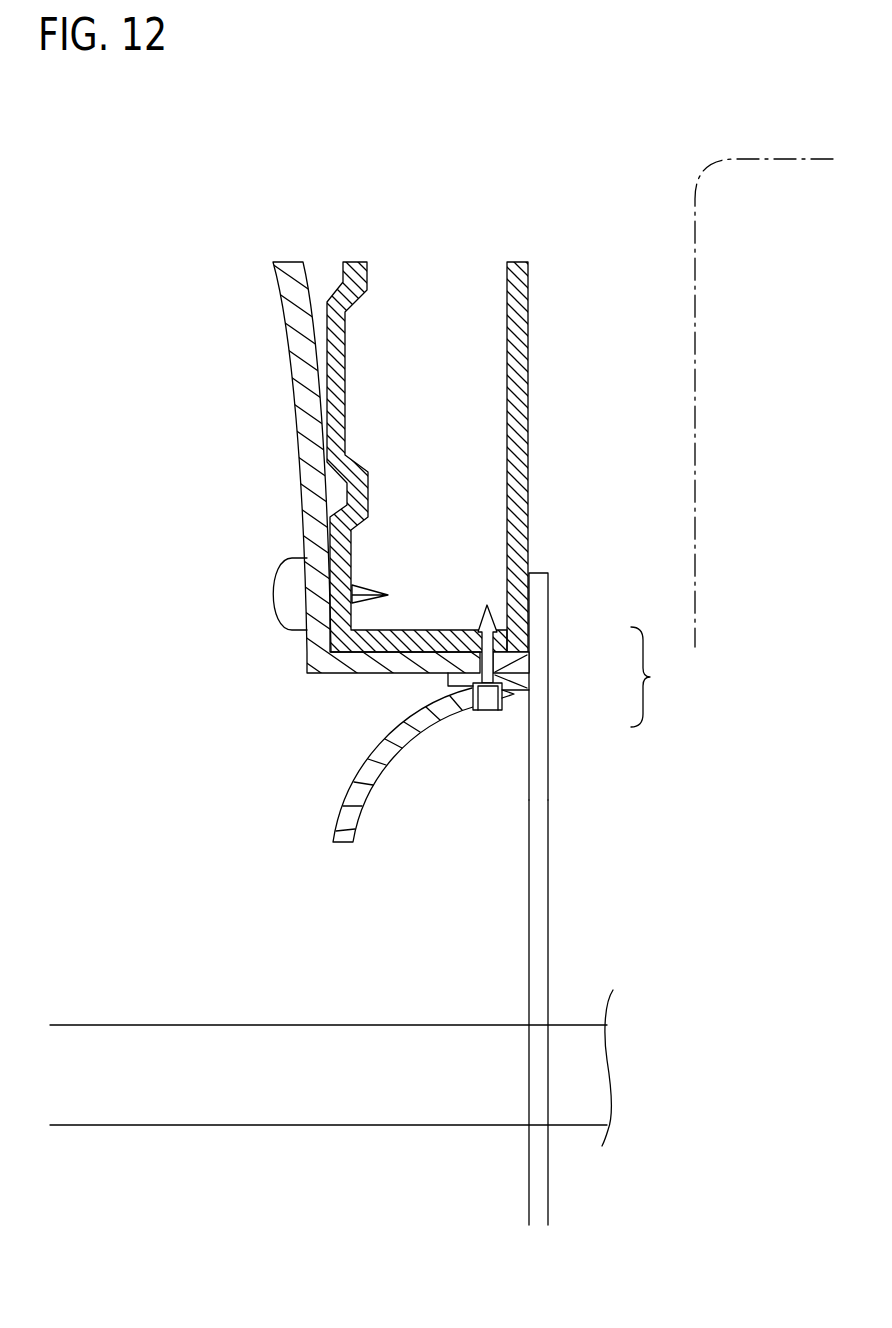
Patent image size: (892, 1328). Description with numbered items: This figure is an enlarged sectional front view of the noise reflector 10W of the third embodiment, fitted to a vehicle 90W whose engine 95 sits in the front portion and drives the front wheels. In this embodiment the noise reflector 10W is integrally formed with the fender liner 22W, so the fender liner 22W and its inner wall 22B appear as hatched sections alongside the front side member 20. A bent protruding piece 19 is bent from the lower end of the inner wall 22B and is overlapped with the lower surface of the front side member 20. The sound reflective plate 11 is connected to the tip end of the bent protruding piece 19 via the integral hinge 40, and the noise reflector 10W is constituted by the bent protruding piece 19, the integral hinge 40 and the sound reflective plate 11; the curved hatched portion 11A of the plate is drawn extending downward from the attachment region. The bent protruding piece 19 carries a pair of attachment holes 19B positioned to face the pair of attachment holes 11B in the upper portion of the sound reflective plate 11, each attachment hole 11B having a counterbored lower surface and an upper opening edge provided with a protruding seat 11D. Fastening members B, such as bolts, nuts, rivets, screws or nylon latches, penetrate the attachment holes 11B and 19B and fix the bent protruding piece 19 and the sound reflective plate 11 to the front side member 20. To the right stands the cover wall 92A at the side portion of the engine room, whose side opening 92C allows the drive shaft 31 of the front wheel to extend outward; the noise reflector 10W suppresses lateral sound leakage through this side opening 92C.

The vehicle 90W is at (171, 191).
The engine 95 is at (764, 147).
The fender liner 22W is at (278, 420).
The inner wall 22B is at (300, 297).
The front side member 20 is at (520, 345).
The cover wall 92A is at (561, 595).
The side opening 92C is at (540, 917).
The bent protruding piece 19 is at (520, 662).
The attachment hole 19B is at (483, 652).
The integral hinge 40 is at (528, 678).
The sound reflective plate 11 is at (528, 695).
The curved flange of clip 11A is at (362, 815).
The attachment hole 11B is at (470, 706).
The protruding seat 11D is at (452, 677).
The fastening member B is at (272, 598).
The noise reflector 10W is at (660, 677).
The drive shaft 31 is at (265, 1095).